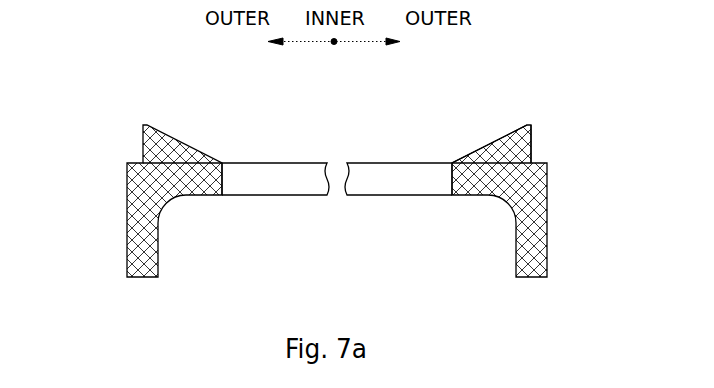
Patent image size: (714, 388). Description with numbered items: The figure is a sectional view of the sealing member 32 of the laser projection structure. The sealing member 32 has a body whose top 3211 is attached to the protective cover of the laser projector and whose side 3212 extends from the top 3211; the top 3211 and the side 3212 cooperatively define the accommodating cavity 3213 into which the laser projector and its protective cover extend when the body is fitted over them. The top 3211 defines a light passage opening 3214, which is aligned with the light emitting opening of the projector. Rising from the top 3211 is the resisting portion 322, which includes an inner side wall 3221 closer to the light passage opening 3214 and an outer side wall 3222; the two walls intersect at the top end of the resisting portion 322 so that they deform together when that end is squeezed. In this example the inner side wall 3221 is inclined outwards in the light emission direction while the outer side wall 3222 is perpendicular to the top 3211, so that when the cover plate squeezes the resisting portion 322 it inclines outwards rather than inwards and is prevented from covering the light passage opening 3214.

The sealing member 32 is at (69, 48).
The resisting portion 322 is at (152, 141).
The top 3211 is at (143, 181).
The side 3212 is at (130, 245).
The accommodating cavity 3213 is at (393, 262).
The light passage opening 3214 is at (297, 158).
The inner side wall 3221 is at (502, 142).
The outer side wall 3222 is at (532, 145).